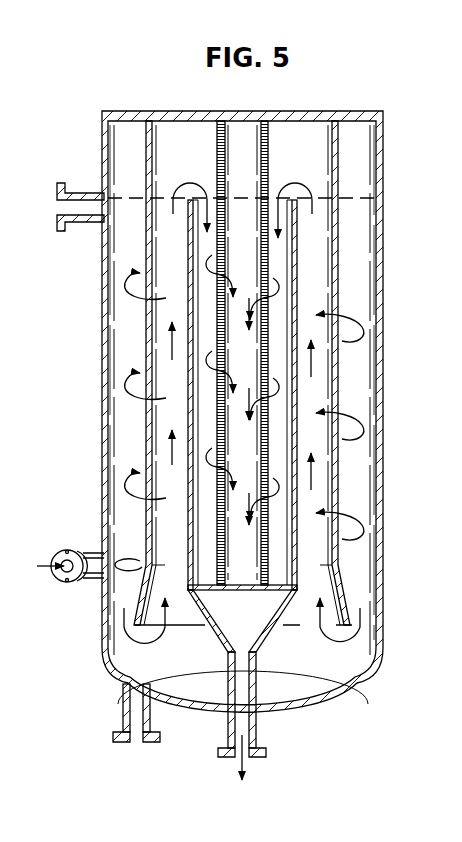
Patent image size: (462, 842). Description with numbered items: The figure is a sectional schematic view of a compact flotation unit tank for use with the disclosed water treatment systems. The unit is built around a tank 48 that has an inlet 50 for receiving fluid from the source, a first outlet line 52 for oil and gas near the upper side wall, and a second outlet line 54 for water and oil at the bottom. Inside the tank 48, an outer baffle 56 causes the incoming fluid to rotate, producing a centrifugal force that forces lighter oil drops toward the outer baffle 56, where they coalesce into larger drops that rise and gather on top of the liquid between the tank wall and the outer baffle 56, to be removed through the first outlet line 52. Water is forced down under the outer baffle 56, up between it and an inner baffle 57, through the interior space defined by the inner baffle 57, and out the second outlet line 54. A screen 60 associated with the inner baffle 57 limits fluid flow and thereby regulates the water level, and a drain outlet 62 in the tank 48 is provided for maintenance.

The tank 48 is at (383, 367).
The inlet 50 is at (90, 550).
The first outlet line 52 is at (85, 190).
The second outlet line 54 is at (256, 730).
The outer baffle 56 is at (340, 236).
The inner baffle 57 is at (297, 273).
The screen 60 is at (268, 160).
The drain outlet 62 is at (123, 712).